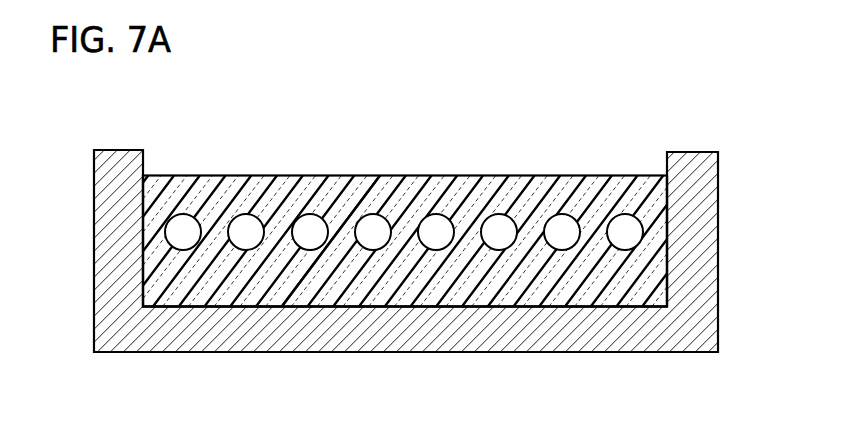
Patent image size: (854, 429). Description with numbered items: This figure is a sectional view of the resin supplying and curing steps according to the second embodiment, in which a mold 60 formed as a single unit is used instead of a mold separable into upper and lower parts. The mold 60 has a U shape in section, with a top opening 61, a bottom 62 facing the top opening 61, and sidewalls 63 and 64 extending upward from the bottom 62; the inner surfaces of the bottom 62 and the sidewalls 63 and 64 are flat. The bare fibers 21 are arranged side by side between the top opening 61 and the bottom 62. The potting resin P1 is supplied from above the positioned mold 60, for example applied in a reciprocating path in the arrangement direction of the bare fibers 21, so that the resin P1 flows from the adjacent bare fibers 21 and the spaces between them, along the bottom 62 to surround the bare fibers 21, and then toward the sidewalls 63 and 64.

The mold 60 is at (80, 167).
The top opening 61 is at (281, 175).
The potting resin P1 is at (367, 190).
The bare fibers 21 is at (624, 216).
The bottom 62 is at (320, 307).
The sidewall 63 is at (147, 243).
The sidewall 64 is at (662, 243).